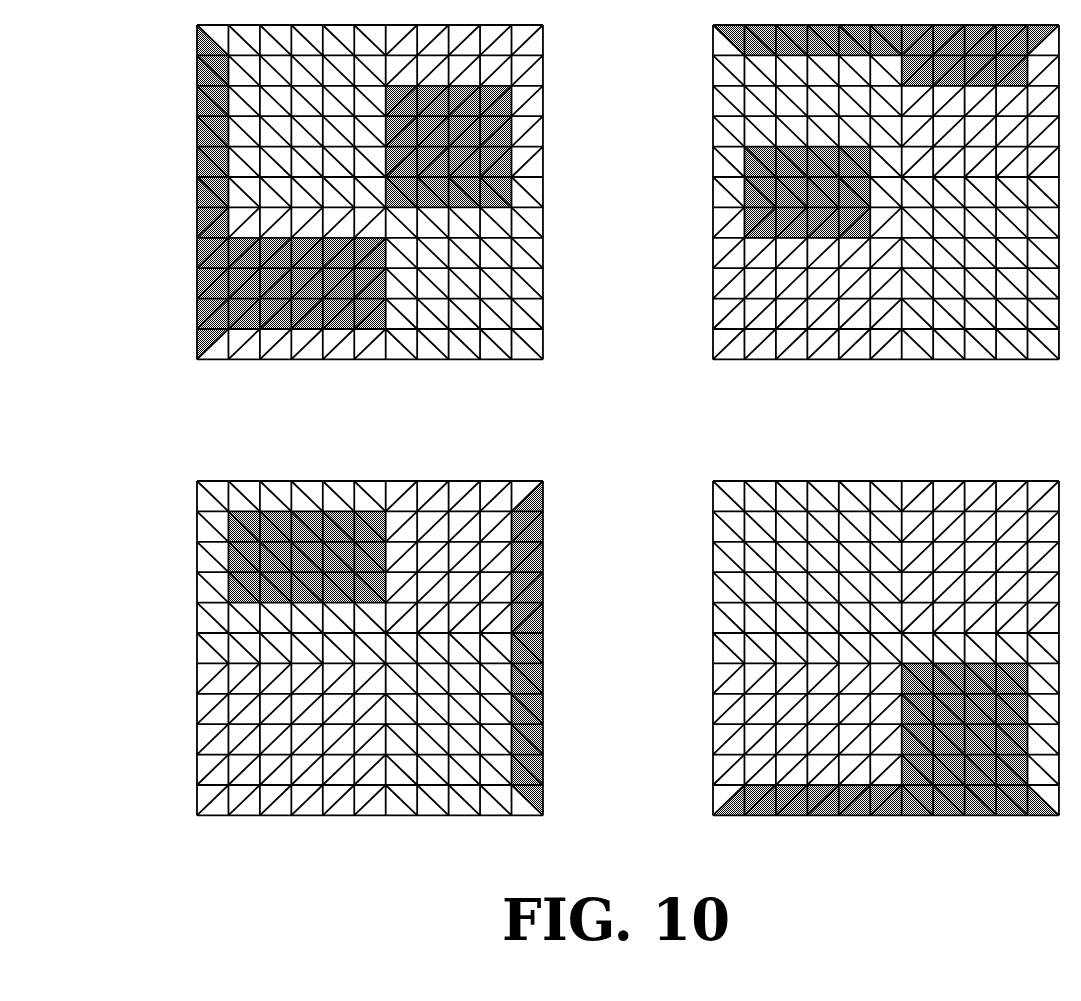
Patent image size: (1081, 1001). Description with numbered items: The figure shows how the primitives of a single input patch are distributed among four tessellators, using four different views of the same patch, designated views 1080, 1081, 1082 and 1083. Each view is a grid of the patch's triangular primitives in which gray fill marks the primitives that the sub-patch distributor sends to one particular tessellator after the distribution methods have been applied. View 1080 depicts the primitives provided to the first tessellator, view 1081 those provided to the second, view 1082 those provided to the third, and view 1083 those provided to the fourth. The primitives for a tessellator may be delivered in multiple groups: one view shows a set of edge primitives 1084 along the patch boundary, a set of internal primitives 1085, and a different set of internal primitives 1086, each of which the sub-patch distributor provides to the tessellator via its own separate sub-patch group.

The view 1080 is at (193, 353).
The view 1081 is at (710, 352).
The view 1082 is at (193, 800).
The view 1083 is at (710, 797).
The set of edge primitives 1084 is at (195, 166).
The set of internal primitives 1085 is at (510, 88).
The set of internal primitives 1086 is at (203, 270).